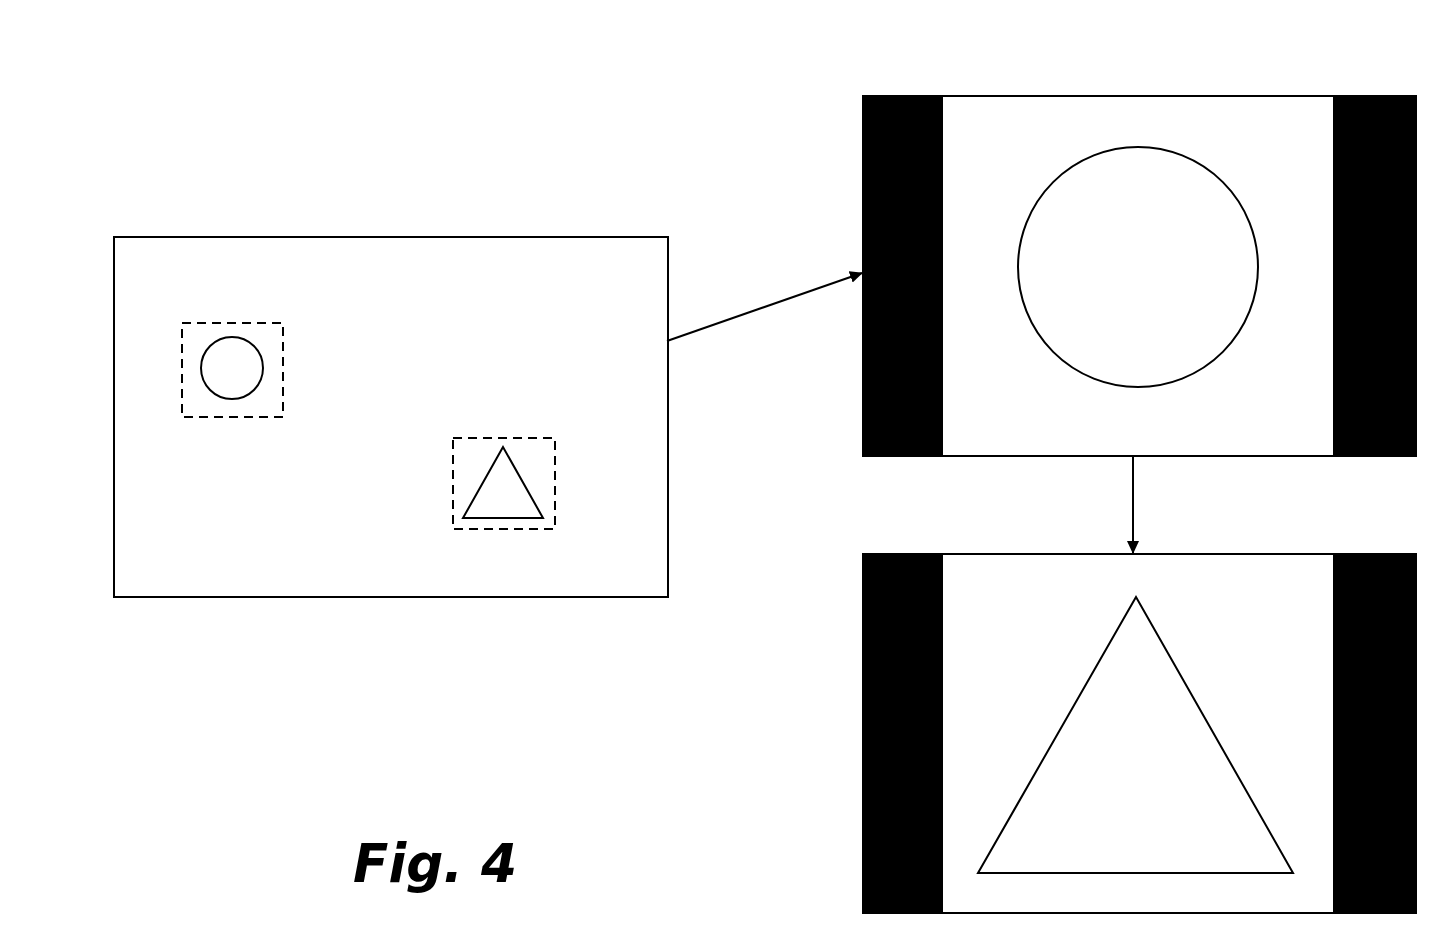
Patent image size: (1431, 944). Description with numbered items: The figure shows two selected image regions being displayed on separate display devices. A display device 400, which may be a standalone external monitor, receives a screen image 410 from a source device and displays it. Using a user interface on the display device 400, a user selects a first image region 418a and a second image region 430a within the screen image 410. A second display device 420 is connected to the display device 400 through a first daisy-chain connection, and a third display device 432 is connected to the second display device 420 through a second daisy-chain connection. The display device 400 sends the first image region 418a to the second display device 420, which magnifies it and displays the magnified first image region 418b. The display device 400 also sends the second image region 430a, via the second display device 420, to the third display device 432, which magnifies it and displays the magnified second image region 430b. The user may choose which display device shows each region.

The display device 400 is at (183, 237).
The screen image 410 is at (443, 263).
The first image region 418a is at (262, 323).
The second image region 430a is at (505, 530).
The second display device 420 is at (1138, 96).
The magnified first image region 418b is at (1020, 118).
The third display device 432 is at (1183, 553).
The magnified second image region 430b is at (1020, 578).